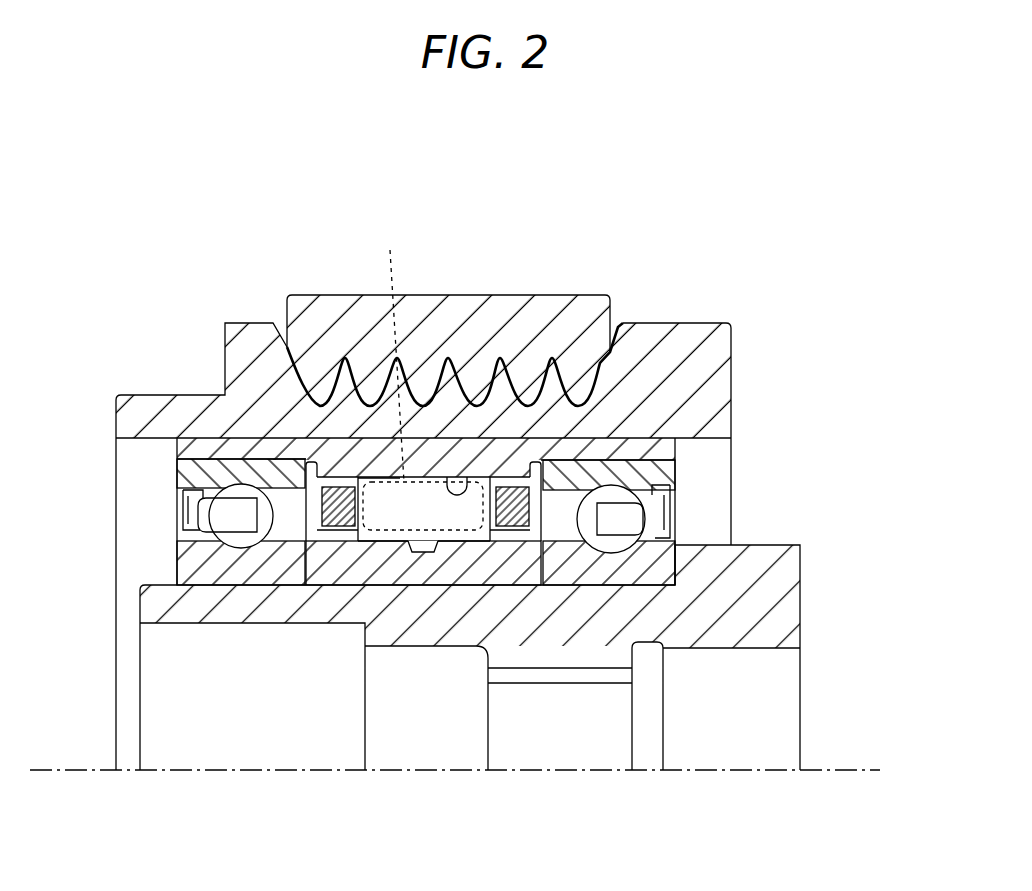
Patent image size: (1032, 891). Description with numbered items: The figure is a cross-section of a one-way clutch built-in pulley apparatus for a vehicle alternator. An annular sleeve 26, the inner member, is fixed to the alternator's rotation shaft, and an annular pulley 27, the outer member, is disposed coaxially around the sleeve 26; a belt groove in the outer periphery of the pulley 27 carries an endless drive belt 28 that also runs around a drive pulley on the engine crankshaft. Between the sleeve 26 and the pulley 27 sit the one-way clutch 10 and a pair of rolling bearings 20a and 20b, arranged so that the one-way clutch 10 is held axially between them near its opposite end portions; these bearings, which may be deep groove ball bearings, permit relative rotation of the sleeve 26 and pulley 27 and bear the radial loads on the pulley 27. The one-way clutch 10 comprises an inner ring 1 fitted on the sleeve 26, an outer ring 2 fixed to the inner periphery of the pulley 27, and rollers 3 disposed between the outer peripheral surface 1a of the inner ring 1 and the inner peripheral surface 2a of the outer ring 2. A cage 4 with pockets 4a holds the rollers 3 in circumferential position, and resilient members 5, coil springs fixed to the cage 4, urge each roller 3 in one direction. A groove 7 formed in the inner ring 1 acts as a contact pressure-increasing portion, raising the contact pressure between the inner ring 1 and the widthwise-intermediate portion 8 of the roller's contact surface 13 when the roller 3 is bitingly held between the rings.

The inner ring 1 is at (356, 543).
The outer peripheral surface 1a is at (493, 547).
The outer ring 2 is at (513, 475).
The inner peripheral surface 2a is at (473, 477).
The roller 3 is at (423, 497).
The cage 4 is at (330, 523).
The pocket 4a is at (382, 477).
The resilient member 5 is at (394, 350).
The groove 7 is at (407, 547).
The widthwise-intermediate portion 8 is at (420, 548).
The one-way clutch 10 is at (310, 427).
The contact surface 13 is at (445, 547).
The rolling bearing 20a is at (218, 452).
The rolling bearing 20b is at (628, 453).
The sleeve 26 is at (787, 584).
The pulley 27 is at (668, 345).
The drive belt 28 is at (318, 303).